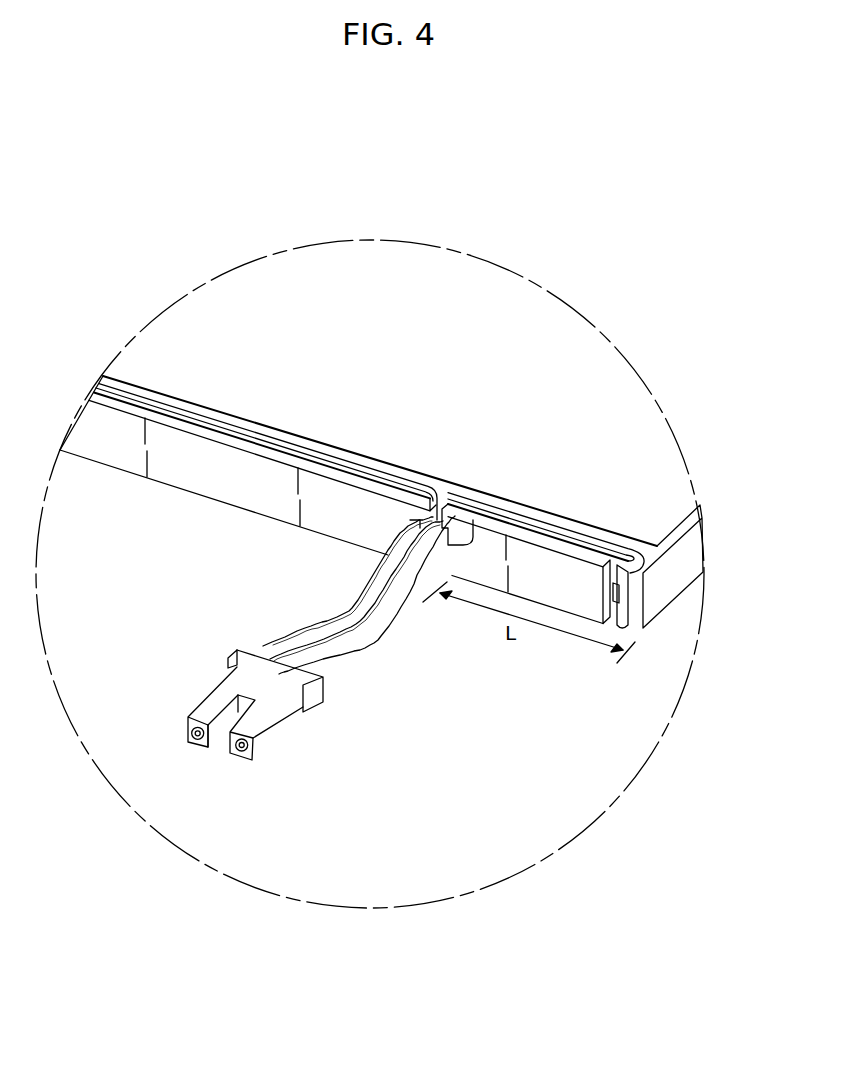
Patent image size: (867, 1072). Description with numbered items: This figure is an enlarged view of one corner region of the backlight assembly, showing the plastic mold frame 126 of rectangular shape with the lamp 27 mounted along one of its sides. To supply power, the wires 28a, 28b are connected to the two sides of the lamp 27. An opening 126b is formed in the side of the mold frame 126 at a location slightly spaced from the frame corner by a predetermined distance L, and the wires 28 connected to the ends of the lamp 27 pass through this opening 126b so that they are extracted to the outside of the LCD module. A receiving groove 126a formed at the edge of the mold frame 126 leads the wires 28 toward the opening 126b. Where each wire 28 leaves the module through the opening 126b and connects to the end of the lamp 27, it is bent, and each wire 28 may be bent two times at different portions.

The mold frame 126 is at (178, 474).
The receiving groove 126a is at (235, 432).
The opening 126b is at (465, 538).
The wires 28 is at (321, 638).
The wire 28a is at (313, 630).
The wire 28b is at (377, 617).
The lamp 27 is at (617, 592).